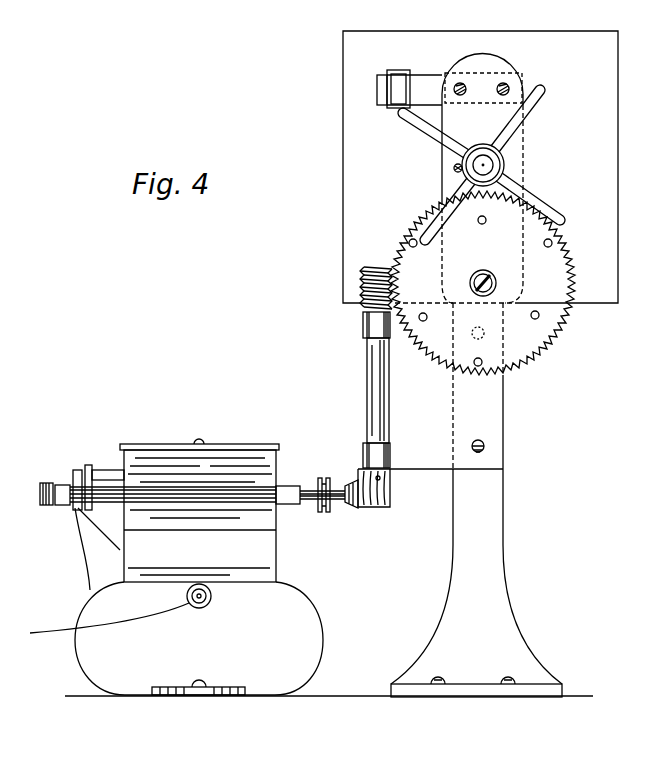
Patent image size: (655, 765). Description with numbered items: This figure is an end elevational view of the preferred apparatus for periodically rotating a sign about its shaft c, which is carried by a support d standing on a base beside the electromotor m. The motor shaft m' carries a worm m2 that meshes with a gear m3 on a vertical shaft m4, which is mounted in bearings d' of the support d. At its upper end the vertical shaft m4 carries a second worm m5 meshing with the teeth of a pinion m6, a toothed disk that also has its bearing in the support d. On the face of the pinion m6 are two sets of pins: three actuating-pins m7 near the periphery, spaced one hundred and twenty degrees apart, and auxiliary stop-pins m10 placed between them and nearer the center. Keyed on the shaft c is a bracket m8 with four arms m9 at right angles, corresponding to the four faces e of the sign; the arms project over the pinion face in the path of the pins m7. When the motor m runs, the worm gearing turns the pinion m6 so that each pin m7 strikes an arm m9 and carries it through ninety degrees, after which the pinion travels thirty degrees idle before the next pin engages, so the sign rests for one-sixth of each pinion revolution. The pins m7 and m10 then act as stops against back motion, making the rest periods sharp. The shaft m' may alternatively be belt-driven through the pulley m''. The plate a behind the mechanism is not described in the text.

The bracket plate a is at (480, 167).
The faces of the sign e is at (526, 31).
The shaft of the sign c is at (486, 164).
The support of the sign d is at (476, 500).
The bearings d' is at (351, 390).
The electromotor m is at (176, 567).
The motor shaft m' is at (310, 510).
The pulley m'' is at (338, 519).
The worm m2 is at (360, 506).
The gear m3 is at (382, 482).
The vertical shaft m4 is at (367, 404).
The worm m5 is at (360, 296).
The pinion m6 is at (531, 344).
The actuating-pins m7 is at (413, 247).
The bracket m8 is at (499, 167).
The arms m9 is at (440, 212).
The auxiliary stop-pins m10 is at (482, 224).